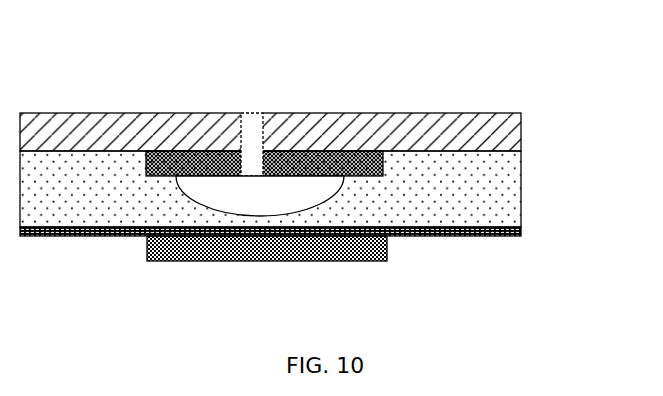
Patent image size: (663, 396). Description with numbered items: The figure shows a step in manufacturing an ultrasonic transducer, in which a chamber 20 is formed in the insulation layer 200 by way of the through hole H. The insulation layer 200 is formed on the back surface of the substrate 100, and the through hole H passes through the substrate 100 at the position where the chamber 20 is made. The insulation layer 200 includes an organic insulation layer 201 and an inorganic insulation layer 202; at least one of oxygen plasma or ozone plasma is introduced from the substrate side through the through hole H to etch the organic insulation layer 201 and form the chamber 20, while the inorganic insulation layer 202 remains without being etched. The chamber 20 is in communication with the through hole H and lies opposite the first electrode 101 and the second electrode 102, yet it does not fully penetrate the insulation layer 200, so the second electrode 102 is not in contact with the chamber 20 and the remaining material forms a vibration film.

The substrate 100 is at (87, 133).
The first electrode 101 is at (172, 160).
The through hole H is at (247, 113).
The chamber 20 is at (260, 196).
The insulation layer 200 is at (320, 196).
The organic insulation layer 201 is at (512, 181).
The inorganic insulation layer 202 is at (512, 229).
The second electrode 102 is at (337, 251).